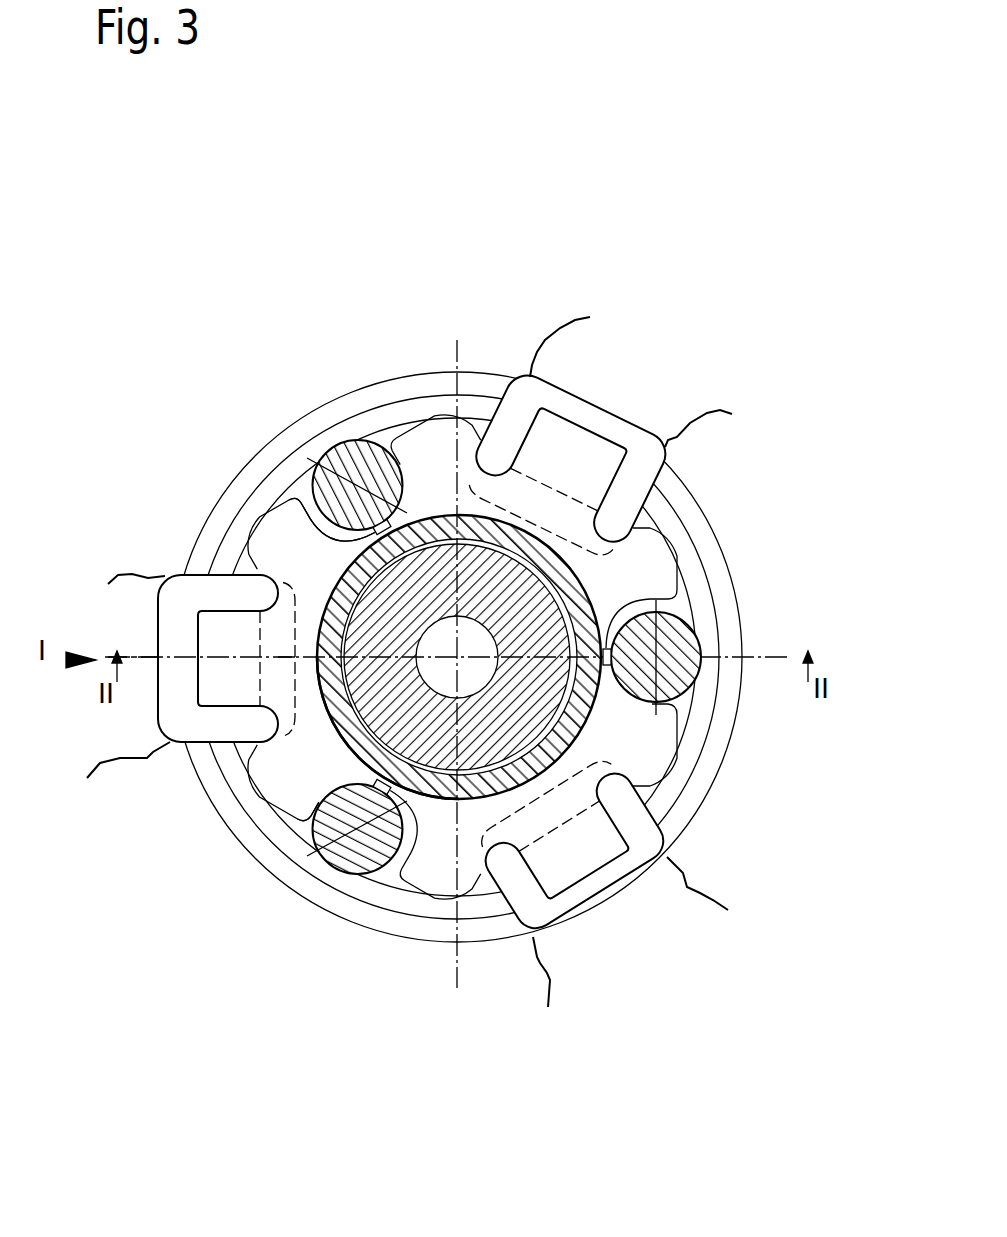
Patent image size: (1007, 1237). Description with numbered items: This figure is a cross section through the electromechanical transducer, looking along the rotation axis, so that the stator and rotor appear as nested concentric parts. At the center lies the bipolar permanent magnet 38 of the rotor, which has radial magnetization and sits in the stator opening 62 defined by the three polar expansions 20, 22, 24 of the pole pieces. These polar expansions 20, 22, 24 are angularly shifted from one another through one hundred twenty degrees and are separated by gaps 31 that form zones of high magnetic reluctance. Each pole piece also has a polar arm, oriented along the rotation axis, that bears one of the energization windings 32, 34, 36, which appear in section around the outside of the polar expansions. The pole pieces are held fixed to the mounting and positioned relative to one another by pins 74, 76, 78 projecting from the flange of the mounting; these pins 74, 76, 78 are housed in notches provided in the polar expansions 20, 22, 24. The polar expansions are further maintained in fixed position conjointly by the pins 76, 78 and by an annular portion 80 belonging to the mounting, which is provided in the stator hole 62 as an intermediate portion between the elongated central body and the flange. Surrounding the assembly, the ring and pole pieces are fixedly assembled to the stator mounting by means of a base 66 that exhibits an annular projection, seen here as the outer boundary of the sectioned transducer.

The polar expansion 20 is at (470, 489).
The polar expansion 22 is at (305, 585).
The polar expansion 24 is at (618, 742).
The gaps 31 is at (303, 562).
The energization winding 32 is at (585, 405).
The energization winding 34 is at (200, 742).
The energization winding 36 is at (587, 903).
The bipolar permanent magnet 38 is at (525, 615).
The stator opening 62 is at (321, 749).
The base 66 is at (697, 517).
The pin 74 is at (357, 445).
The pin 76 is at (679, 640).
The pin 78 is at (318, 815).
The annular portion 80 is at (440, 855).